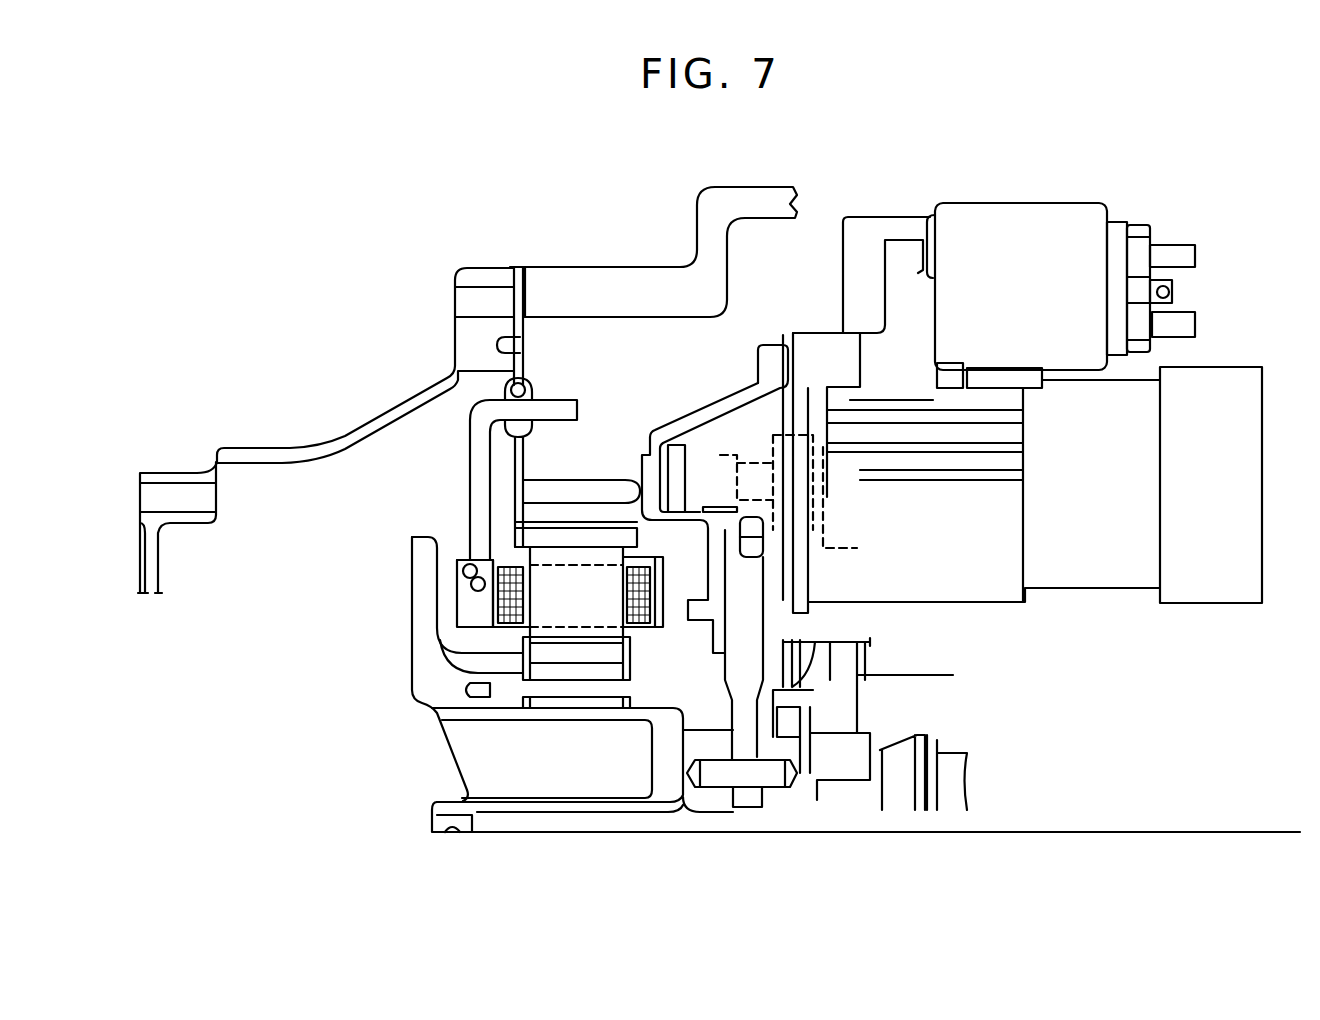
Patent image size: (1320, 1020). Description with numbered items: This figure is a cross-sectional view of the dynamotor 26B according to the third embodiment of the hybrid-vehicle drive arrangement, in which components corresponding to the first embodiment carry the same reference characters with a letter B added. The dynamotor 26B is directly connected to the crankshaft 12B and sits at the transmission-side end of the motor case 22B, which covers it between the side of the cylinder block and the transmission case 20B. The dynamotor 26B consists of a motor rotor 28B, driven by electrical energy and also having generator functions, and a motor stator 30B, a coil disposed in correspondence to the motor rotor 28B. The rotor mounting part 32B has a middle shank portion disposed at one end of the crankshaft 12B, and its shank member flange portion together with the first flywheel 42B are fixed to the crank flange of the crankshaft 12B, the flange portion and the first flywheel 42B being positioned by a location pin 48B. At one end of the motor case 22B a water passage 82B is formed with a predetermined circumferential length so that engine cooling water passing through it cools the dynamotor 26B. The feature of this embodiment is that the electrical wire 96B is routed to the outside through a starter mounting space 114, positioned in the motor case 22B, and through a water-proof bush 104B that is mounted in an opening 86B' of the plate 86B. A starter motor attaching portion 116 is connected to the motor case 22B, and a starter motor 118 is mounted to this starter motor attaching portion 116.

The crankshaft 12B is at (920, 800).
The transmission case 20B is at (278, 453).
The motor case 22B is at (642, 262).
The dynamotor 26B is at (460, 445).
The motor rotor 28B is at (538, 652).
The motor stator 30B is at (498, 598).
The rotor mounting part 32B is at (428, 710).
The first flywheel 42B is at (742, 738).
The location pin 48B is at (777, 777).
The water passage 82B is at (583, 487).
The plate 86B is at (542, 277).
The opening 86B' is at (487, 313).
The electrical wire 96B is at (475, 487).
The water-proof bush 104B is at (533, 390).
The starter mounting space 114 is at (557, 393).
The starter motor attaching portion 116 is at (767, 353).
The starter motor 118 is at (1001, 218).